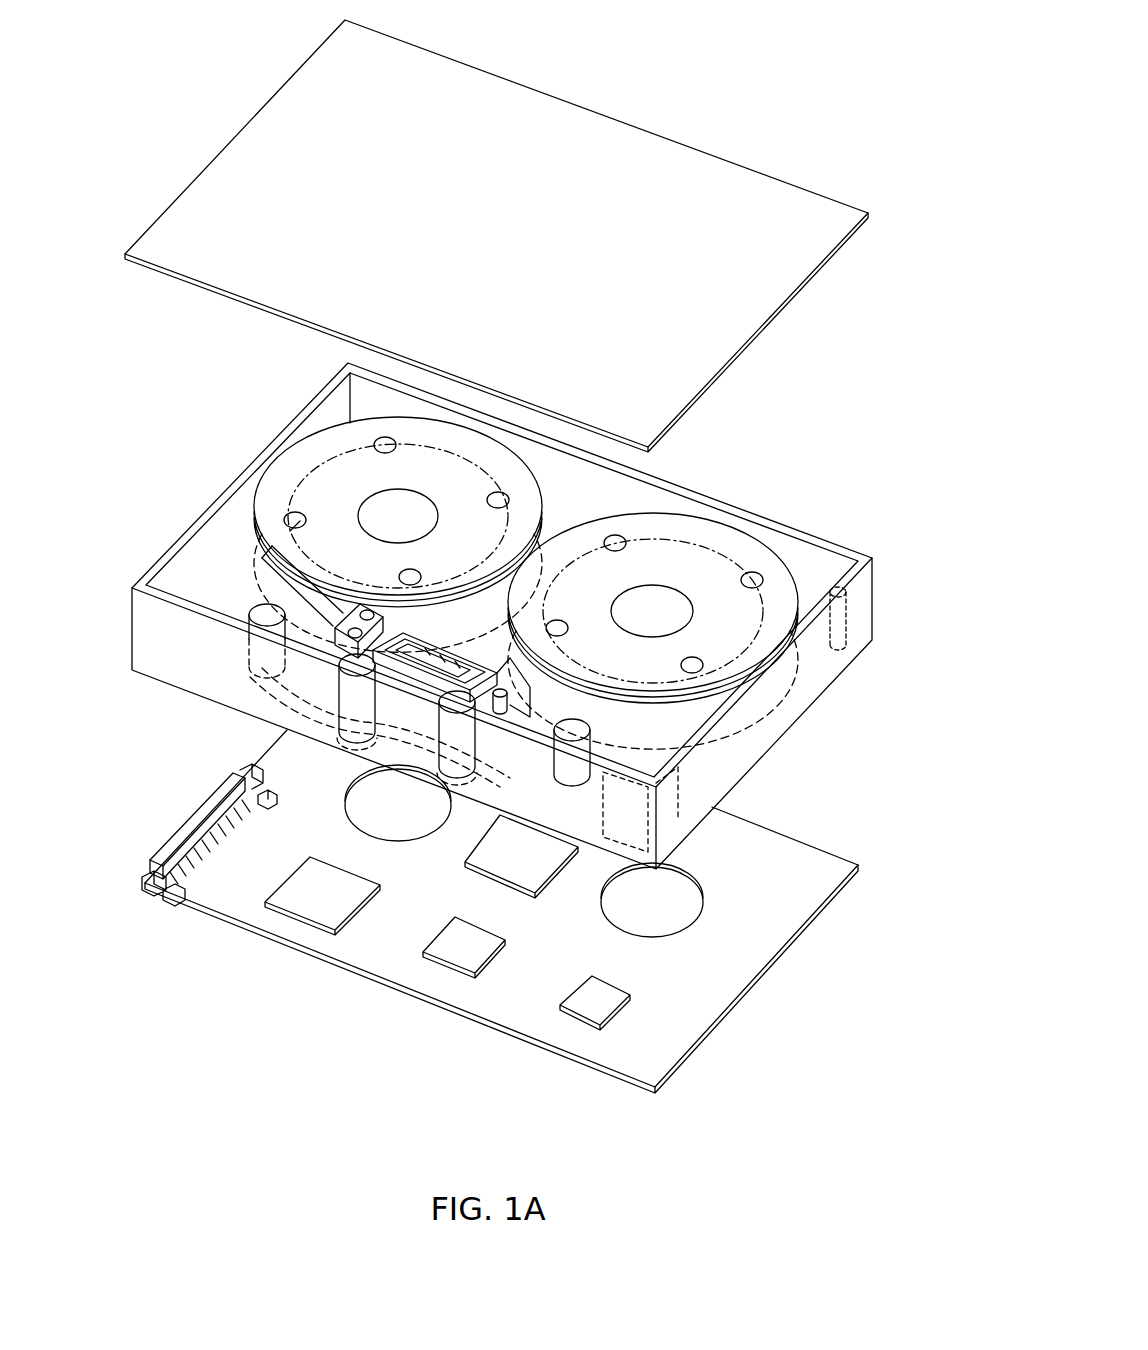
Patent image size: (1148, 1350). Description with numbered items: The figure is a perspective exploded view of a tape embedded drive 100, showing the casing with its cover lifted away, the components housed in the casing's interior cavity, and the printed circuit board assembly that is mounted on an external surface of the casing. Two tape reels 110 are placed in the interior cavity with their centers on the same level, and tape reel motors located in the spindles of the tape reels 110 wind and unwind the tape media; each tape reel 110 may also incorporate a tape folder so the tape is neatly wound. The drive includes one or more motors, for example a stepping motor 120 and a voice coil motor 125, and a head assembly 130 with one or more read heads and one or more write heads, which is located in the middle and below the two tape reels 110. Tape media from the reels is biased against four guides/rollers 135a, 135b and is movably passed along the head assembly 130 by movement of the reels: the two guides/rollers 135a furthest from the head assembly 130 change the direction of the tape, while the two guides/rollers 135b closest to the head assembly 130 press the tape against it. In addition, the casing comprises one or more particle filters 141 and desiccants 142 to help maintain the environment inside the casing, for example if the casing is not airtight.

The tape embedded drive 100 is at (774, 93).
The tape reel 110 is at (458, 432).
The stepping motor 120 is at (322, 632).
The voice coil motor 125 is at (415, 652).
The head assembly 130 is at (415, 652).
The tape guide/roller 135a is at (260, 614).
The tape guide/roller 135b is at (342, 672).
The particle filter 141 is at (850, 620).
The desiccant 142 is at (665, 807).